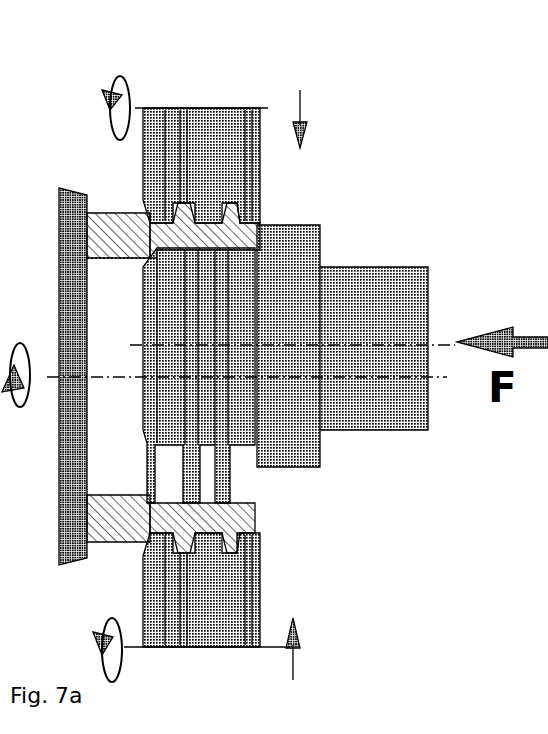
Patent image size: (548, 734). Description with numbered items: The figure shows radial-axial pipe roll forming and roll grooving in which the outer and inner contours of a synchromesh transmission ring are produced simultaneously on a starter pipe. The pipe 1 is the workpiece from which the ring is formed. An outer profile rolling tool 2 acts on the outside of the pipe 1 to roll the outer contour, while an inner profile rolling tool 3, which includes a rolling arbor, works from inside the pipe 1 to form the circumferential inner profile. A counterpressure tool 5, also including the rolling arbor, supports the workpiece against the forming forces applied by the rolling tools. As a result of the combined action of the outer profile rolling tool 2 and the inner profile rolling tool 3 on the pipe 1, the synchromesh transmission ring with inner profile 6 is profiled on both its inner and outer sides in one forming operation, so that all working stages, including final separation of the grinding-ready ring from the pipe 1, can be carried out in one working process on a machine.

The pipe 1 is at (115, 245).
The outer profile rolling tool 2 is at (203, 149).
The inner profile rolling tool 3 is at (168, 312).
The counterpressure tool 5 is at (293, 247).
The synchromesh transmission ring with inner profile 6 is at (227, 233).